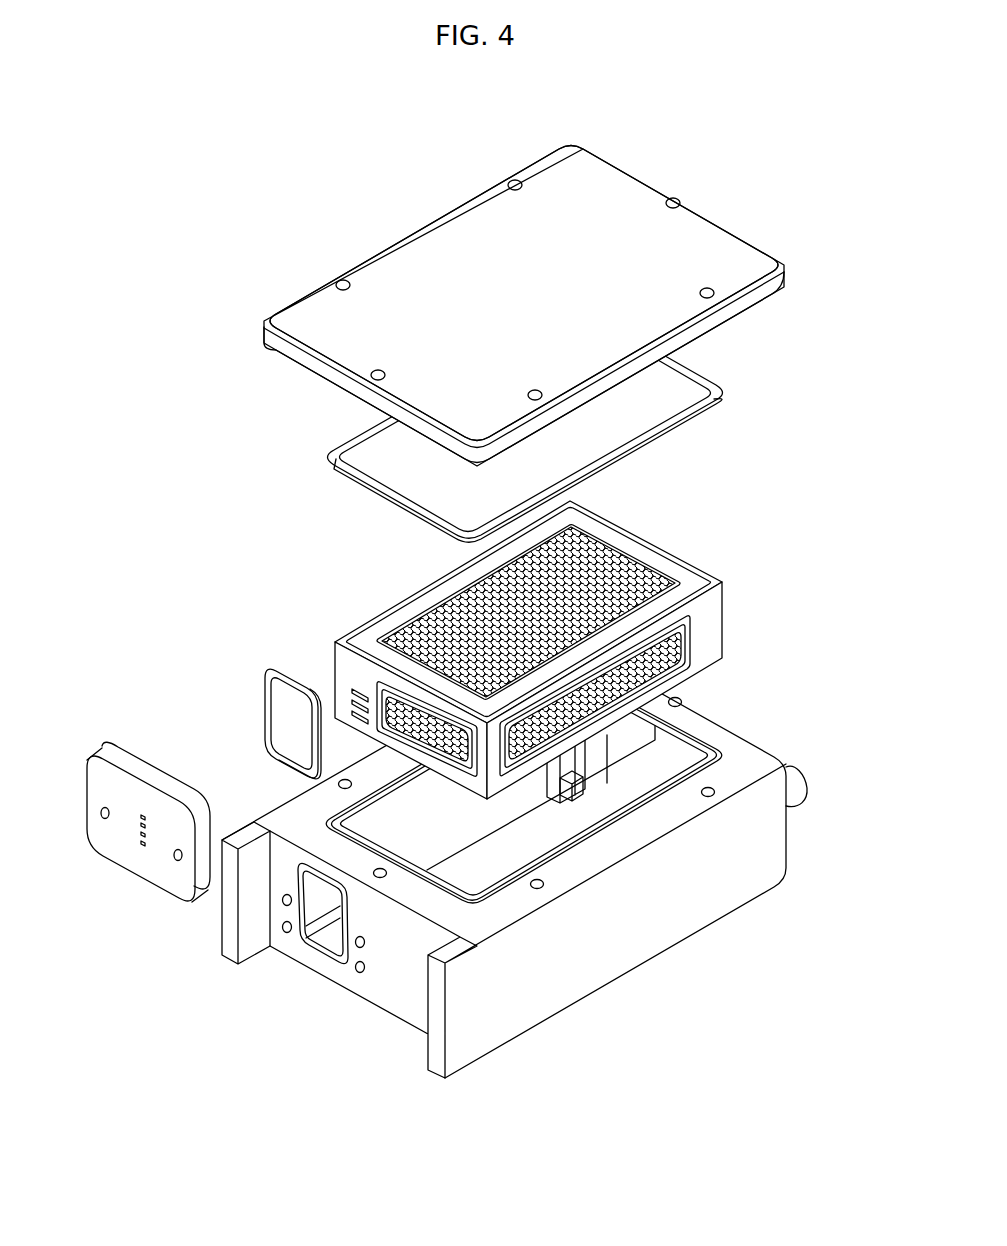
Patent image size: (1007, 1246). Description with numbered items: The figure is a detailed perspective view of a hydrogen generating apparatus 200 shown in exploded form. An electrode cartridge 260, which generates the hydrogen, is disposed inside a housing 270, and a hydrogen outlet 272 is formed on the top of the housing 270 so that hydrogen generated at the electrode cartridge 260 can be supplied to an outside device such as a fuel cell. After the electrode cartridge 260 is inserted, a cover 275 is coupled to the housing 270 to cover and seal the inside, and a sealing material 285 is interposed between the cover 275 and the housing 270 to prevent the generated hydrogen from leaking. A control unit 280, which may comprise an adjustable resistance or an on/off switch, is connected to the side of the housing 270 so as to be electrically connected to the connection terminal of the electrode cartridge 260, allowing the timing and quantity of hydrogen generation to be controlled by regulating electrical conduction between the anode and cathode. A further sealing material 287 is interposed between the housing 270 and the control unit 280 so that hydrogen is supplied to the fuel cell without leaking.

The hydrogen generating apparatus 200 is at (770, 147).
The electrode cartridge 260 is at (680, 565).
The housing 270 is at (728, 735).
The hydrogen outlet 272 is at (797, 783).
The cover 275 is at (727, 248).
The control unit 280 is at (160, 880).
The sealing material 285 is at (712, 383).
The sealing material 287 is at (267, 693).